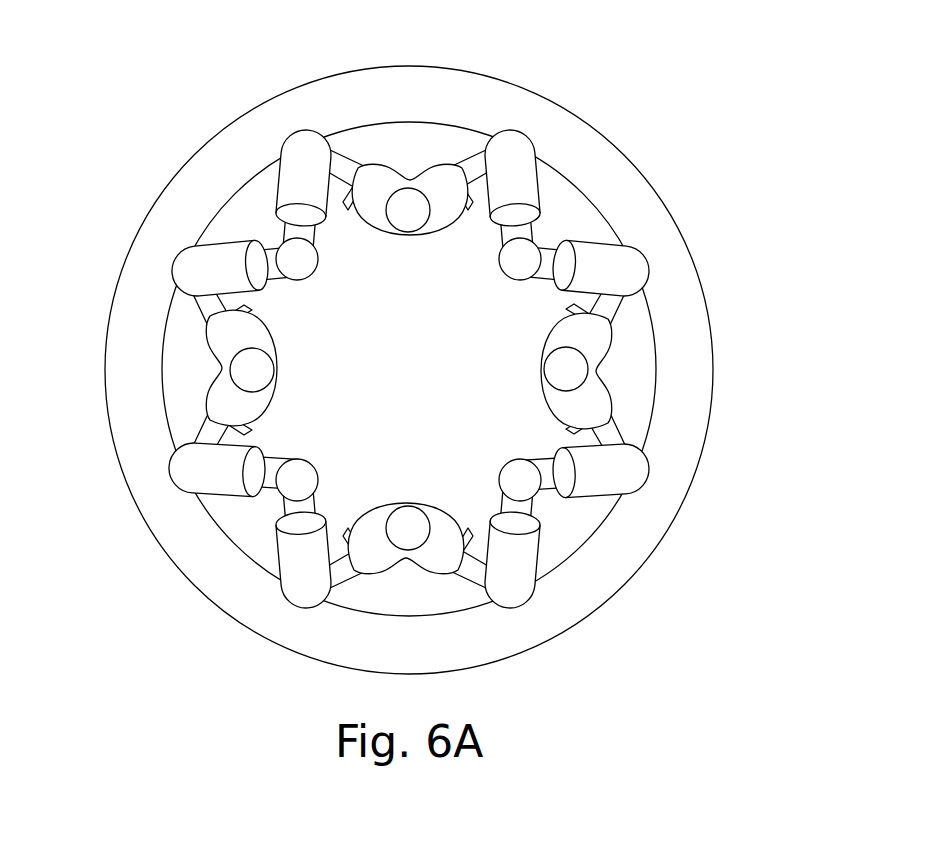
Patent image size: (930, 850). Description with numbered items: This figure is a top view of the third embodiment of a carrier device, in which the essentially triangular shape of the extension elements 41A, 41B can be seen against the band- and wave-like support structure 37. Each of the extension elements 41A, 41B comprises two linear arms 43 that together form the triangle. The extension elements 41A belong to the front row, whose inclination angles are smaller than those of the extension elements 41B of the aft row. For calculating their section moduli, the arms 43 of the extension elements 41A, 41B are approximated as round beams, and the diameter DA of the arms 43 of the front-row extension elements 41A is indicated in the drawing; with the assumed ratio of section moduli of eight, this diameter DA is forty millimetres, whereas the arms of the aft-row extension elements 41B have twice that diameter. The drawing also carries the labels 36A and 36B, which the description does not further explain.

The linear arm 43 is at (190, 257).
The pad / ball joint 36B is at (307, 260).
The pad 36A is at (264, 374).
The extension element of the front row 41A is at (428, 595).
The extension element of the aft row 41B is at (233, 532).
The support structure 37 is at (700, 455).
The diameter of the front-row arms DA is at (573, 446).